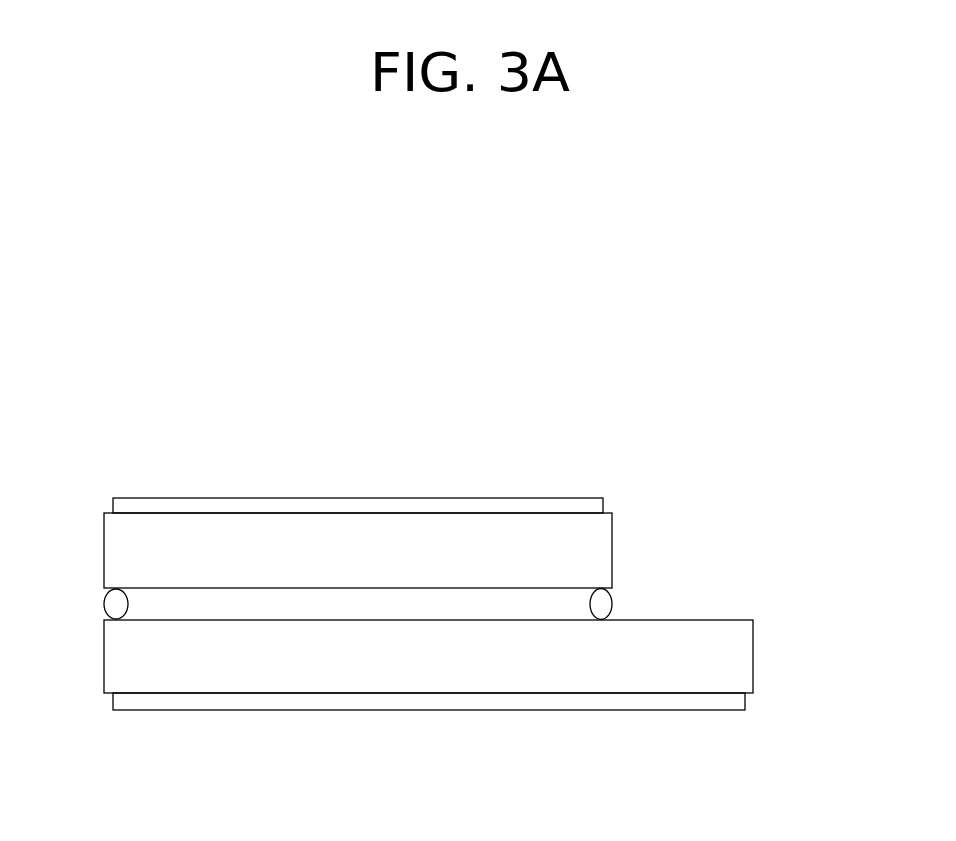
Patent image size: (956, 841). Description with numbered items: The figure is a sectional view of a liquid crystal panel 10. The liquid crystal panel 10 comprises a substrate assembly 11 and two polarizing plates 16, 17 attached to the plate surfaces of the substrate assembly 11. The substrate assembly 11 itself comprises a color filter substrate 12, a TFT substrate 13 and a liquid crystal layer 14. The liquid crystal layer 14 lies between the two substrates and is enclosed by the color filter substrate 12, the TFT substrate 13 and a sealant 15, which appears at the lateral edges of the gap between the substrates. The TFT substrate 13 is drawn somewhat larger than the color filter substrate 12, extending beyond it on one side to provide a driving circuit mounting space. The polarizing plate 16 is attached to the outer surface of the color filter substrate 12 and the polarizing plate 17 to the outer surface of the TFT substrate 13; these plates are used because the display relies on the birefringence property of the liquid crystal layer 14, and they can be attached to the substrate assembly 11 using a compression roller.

The liquid crystal panel 10 is at (113, 430).
The substrate assembly 11 is at (831, 508).
The color filter substrate 12 is at (600, 540).
The TFT substrate 13 is at (740, 648).
The liquid crystal layer 14 is at (543, 598).
The sealant 15 is at (603, 600).
The polarizing plate 16 is at (357, 498).
The polarizing plate 17 is at (445, 710).